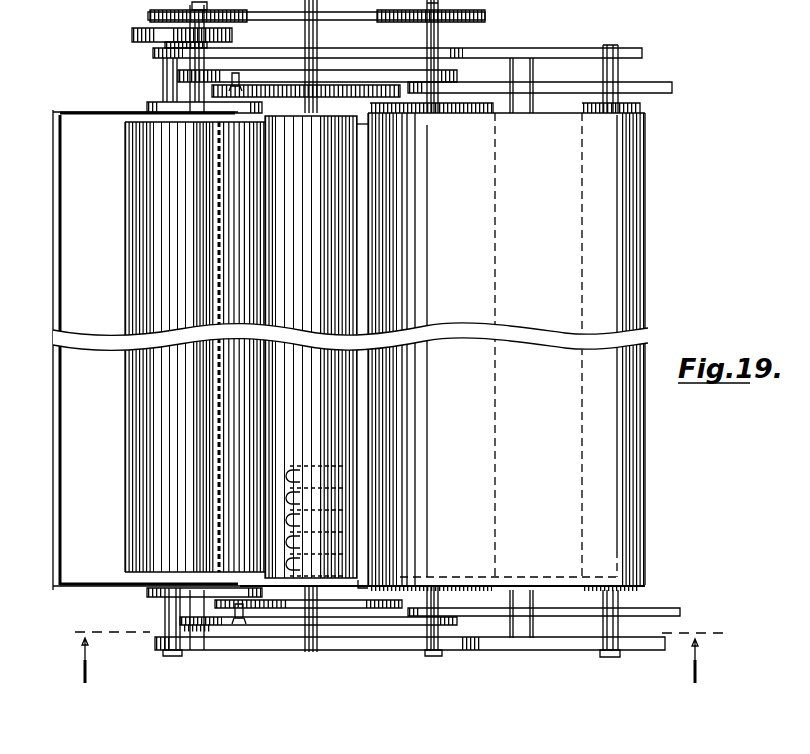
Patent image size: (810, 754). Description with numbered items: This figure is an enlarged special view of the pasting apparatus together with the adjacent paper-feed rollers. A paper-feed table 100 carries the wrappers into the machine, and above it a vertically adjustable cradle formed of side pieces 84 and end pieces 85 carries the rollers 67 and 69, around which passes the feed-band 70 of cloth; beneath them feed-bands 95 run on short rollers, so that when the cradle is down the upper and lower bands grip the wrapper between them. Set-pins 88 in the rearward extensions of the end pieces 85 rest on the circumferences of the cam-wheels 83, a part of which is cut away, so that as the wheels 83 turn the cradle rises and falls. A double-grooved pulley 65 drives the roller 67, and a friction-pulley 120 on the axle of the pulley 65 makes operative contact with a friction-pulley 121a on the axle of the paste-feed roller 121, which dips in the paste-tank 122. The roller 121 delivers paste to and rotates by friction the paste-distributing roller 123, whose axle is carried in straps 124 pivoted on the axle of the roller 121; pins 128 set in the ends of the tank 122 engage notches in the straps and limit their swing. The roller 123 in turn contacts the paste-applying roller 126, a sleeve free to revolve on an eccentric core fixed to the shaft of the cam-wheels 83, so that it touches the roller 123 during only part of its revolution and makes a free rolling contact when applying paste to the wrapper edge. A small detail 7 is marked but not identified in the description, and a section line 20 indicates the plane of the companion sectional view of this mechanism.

The double-grooved pulley 65 is at (141, 19).
The roller 67 is at (487, 18).
The friction-pulley 121a is at (156, 37).
The friction-pulley 120 is at (201, 44).
The set-pins 88 is at (241, 70).
The straps 124 is at (182, 106).
The pins 128 is at (146, 99).
The cam-wheels 83 is at (336, 88).
The end pieces 85 is at (395, 66).
The side pieces 84 is at (494, 77).
The paste-tank 122 is at (146, 350).
The paste-feed roller 121 is at (122, 436).
The paste-distributing roller 123 is at (230, 491).
The paste-applying roller 126 is at (316, 347).
The feed-band 70 is at (506, 344).
The pin 7 is at (363, 581).
The paper-feed table 100 is at (374, 595).
The rollers 69 is at (580, 588).
The feed-bands 95 is at (536, 633).
The section line 20- 20 is at (403, 653).